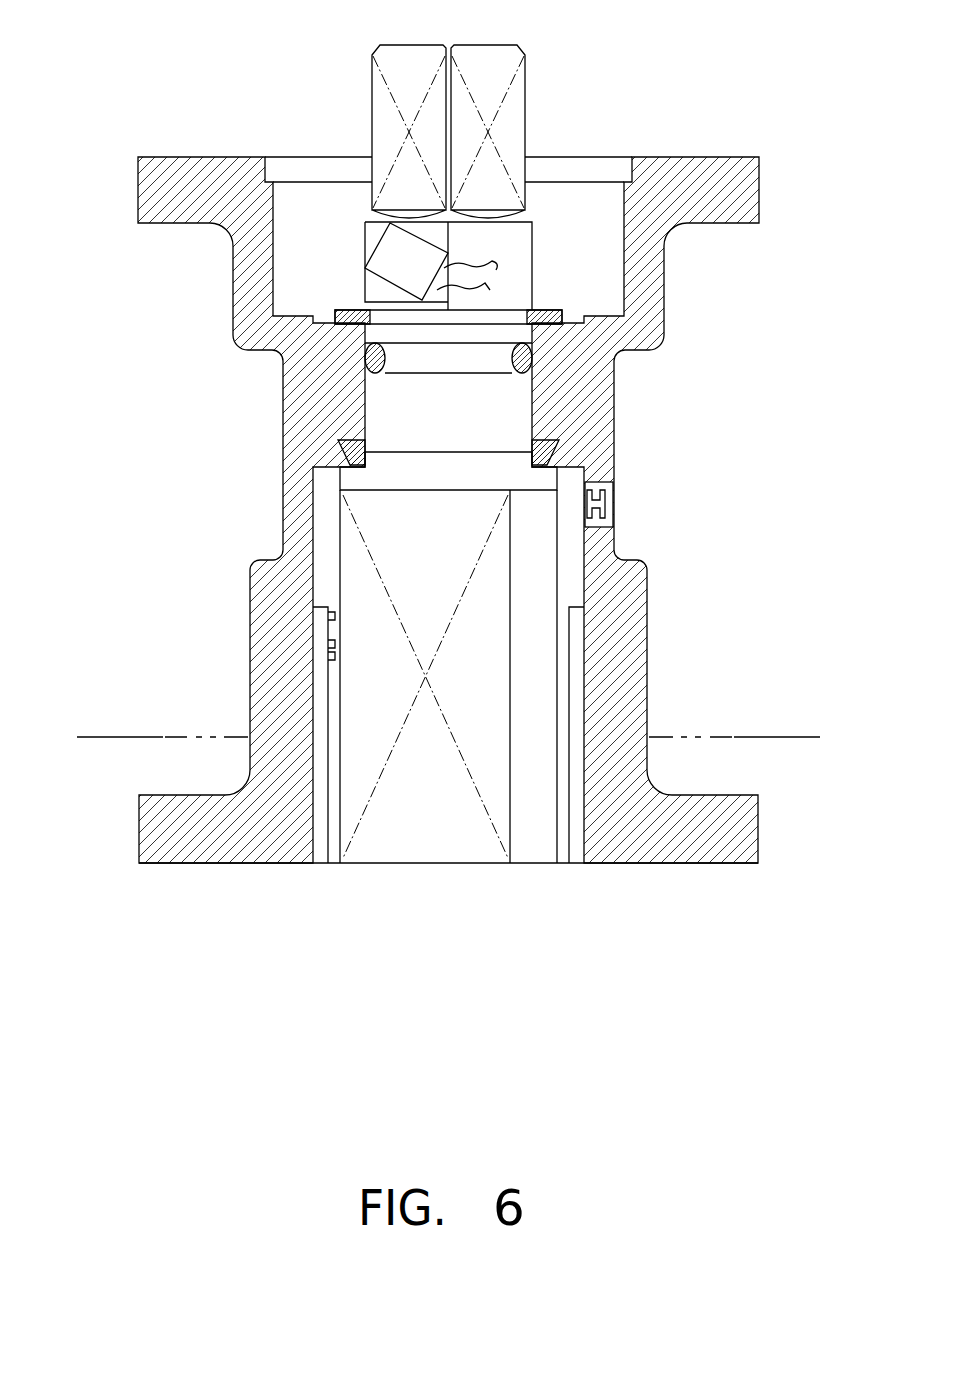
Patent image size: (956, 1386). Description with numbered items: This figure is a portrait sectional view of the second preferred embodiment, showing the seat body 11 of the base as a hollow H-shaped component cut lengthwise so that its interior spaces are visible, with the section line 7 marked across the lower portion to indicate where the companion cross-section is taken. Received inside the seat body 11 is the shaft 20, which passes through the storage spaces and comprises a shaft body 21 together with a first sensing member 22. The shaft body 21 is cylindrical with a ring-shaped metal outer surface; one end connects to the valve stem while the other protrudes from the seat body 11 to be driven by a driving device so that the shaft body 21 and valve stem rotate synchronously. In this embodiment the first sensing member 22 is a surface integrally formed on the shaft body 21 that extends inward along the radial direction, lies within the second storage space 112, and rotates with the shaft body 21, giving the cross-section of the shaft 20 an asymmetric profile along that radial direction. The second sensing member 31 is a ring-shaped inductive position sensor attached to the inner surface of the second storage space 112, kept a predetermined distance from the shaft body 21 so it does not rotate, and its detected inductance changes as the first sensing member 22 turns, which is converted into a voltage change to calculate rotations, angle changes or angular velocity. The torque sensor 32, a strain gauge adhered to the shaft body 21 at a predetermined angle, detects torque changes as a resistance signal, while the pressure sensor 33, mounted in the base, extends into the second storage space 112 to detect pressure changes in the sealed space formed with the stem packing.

The seat body 11 is at (663, 308).
The second storage space 112 is at (572, 576).
The shaft 20 is at (210, 417).
The shaft body 21 is at (373, 483).
The first sensing member 22 is at (352, 555).
The second sensing member 31 is at (320, 678).
The torque sensor 32 is at (397, 262).
The pressure sensor 33 is at (596, 494).
The section line 7- 7 is at (92, 735).